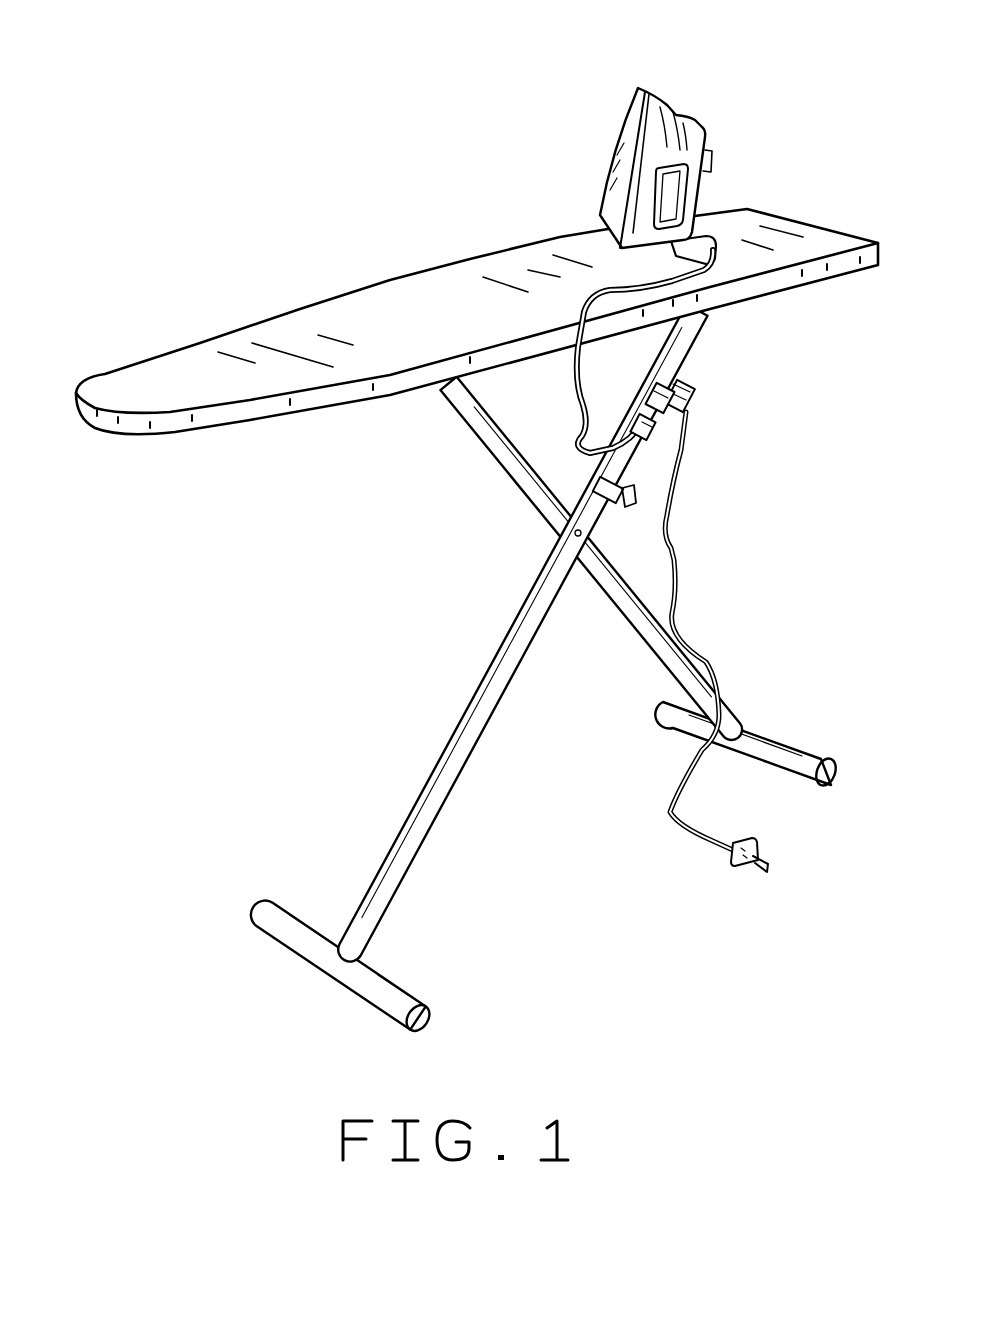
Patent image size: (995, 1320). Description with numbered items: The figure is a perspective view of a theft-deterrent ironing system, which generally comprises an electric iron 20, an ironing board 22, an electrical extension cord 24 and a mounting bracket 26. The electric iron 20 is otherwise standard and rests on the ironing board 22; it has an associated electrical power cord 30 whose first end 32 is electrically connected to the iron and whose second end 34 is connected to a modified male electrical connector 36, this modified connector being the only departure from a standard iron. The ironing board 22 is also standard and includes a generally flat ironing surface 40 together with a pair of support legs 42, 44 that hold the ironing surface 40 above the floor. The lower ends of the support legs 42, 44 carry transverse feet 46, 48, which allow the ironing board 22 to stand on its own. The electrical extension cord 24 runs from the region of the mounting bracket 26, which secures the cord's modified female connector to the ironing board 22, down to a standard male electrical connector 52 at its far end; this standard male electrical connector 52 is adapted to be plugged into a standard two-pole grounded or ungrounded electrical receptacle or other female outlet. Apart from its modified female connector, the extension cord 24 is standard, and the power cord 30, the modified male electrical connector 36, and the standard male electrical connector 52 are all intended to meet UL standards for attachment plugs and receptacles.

The electric iron 20 is at (660, 97).
The ironing board 22 is at (362, 283).
The electrical extension cord 24 is at (678, 540).
The mounting bracket 26 is at (684, 384).
The electrical power cord 30 is at (593, 297).
The first end 32 is at (712, 240).
The second end 34 is at (636, 452).
The modified male electrical connector 36 is at (656, 438).
The ironing surface 40 is at (433, 300).
The support leg 42 is at (507, 468).
The support leg 44 is at (513, 615).
The transverse foot 46 is at (802, 743).
The transverse foot 48 is at (398, 982).
The standard male electrical connector 52 is at (748, 837).